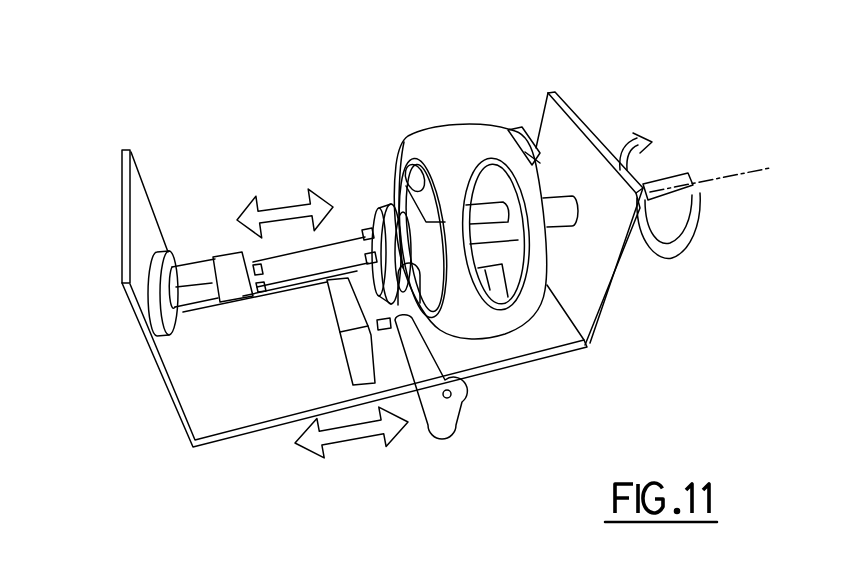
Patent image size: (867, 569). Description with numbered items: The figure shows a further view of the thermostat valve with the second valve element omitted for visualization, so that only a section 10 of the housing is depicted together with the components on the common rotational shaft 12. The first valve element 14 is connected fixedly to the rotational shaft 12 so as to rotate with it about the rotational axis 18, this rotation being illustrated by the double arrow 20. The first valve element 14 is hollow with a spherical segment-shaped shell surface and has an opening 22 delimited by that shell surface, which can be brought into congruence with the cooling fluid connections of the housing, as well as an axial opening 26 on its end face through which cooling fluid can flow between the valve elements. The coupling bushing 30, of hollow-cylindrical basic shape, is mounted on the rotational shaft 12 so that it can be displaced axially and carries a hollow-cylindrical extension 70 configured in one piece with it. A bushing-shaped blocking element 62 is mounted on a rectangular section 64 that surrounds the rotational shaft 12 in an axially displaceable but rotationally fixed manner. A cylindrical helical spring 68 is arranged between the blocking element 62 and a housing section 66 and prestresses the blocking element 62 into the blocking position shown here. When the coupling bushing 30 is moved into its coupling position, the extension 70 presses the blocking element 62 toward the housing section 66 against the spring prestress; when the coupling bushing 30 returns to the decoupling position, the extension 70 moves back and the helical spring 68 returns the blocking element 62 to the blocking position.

The section of the housing 10 is at (216, 410).
The rotational shaft 12 is at (670, 183).
The first valve element 14 is at (475, 143).
The rotational axis 18 is at (748, 170).
The double arrow 20 is at (693, 240).
The opening 22 is at (500, 170).
The axial opening 26 is at (400, 152).
The coupling bushing 30 is at (382, 237).
The blocking element 62 is at (230, 272).
The rectangular section 64 is at (200, 265).
The housing section 66 is at (150, 257).
The helical spring 68 is at (207, 293).
The hollow-cylindrical extension 70 is at (303, 263).